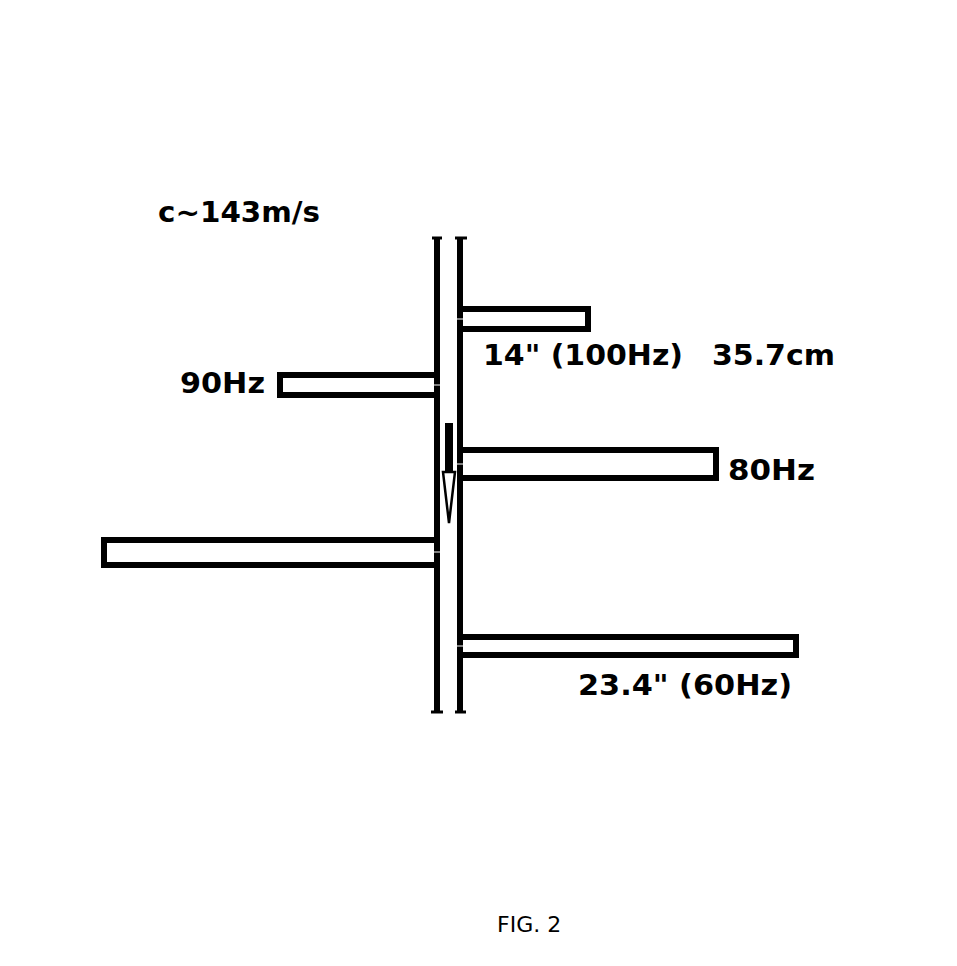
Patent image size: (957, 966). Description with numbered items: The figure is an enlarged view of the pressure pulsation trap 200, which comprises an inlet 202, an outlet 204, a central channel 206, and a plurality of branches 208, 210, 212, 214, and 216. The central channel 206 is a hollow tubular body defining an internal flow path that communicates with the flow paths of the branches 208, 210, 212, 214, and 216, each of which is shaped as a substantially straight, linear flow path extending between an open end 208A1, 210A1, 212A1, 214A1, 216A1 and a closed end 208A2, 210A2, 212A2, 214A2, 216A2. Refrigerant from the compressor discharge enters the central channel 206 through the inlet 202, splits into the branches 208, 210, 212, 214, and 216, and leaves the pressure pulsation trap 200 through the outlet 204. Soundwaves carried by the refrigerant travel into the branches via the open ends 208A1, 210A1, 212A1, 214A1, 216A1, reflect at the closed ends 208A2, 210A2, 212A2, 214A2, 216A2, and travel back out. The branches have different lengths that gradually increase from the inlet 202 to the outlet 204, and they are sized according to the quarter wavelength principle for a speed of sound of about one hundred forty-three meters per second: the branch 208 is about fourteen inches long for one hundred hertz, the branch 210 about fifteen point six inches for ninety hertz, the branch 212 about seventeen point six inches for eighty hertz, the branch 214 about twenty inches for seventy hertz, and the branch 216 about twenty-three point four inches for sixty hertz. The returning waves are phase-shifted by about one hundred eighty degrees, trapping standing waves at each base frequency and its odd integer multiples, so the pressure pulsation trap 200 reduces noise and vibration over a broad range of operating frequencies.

The pressure pulsation trap 200 is at (66, 61).
The inlet 202 is at (463, 238).
The outlet 204 is at (437, 710).
The central channel 206 is at (434, 290).
The branch 208 is at (544, 304).
The open end of branch 208 208A1 is at (434, 320).
The closed end of branch 208 208A2 is at (592, 320).
The branch 210 is at (376, 400).
The open end of branch 210 210A1 is at (433, 388).
The closed end of branch 210 210A2 is at (280, 373).
The branch 212 is at (671, 468).
The open end of branch 212 212A1 is at (466, 461).
The closed end of branch 212 212A2 is at (717, 450).
The branch 214 is at (273, 600).
The open end of branch 214 214A1 is at (435, 550).
The closed end of branch 214 214A2 is at (108, 565).
The branch 216 is at (673, 648).
The open end of branch 216 216A1 is at (462, 641).
The closed end of branch 216 216A2 is at (796, 640).